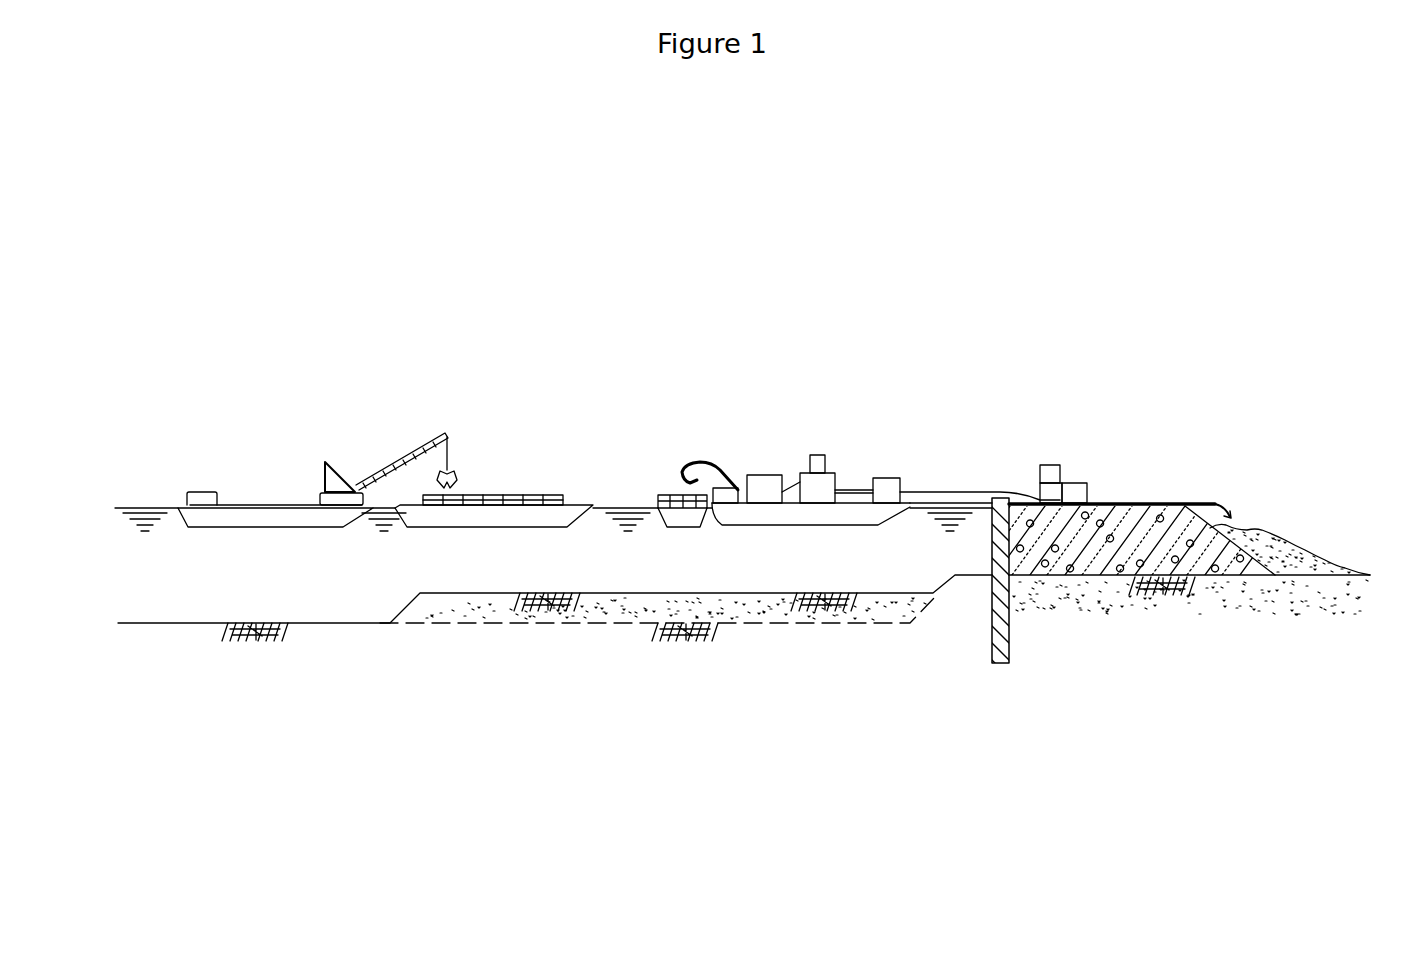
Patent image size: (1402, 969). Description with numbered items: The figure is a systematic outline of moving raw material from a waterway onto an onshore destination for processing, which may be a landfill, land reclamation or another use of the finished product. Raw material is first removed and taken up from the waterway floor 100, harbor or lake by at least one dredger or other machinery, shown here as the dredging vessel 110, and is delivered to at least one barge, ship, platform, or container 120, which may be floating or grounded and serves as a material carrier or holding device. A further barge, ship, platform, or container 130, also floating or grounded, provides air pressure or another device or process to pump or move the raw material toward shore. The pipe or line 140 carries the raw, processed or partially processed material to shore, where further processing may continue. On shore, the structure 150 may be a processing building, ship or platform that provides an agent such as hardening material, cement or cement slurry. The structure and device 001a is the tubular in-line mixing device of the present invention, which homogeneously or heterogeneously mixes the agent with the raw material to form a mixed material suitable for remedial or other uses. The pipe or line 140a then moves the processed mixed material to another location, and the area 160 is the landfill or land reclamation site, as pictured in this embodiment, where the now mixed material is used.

The waterway floor 100 is at (188, 625).
The dredging vessel with crane 110 is at (245, 490).
The barge, ship, platform, or container 120 is at (485, 490).
The barge, ship, platform, or container 130 is at (745, 458).
The pipe or line 140 is at (943, 482).
The structure 150 is at (1045, 460).
The tubular in-line mixing device 001a is at (1074, 465).
The pipe or line 140a is at (1182, 495).
The area 160 is at (1289, 515).